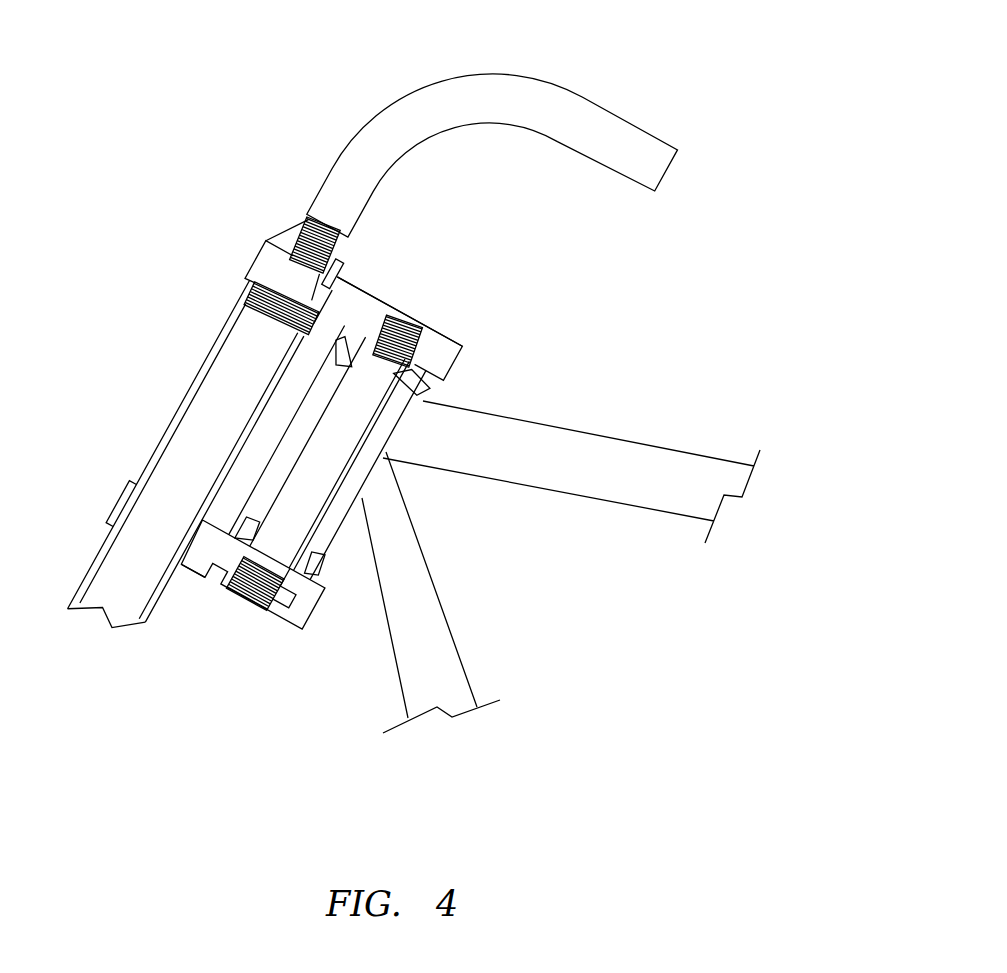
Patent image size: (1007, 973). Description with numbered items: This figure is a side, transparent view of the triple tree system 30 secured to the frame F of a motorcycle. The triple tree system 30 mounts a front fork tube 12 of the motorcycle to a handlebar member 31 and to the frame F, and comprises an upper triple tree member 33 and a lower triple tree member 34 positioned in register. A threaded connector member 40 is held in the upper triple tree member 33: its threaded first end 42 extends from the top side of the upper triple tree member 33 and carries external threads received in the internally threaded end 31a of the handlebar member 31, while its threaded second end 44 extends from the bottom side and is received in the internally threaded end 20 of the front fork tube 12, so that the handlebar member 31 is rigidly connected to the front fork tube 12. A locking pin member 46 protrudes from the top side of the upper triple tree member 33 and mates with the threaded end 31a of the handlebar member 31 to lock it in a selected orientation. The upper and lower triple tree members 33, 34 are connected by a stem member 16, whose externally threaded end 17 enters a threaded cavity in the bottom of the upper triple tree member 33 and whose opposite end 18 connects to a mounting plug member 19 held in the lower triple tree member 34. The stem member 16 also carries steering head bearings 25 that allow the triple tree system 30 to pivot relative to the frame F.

The front fork tube 12 is at (183, 400).
The stem member 16 is at (352, 464).
The threaded end of stem member 17 is at (436, 333).
The opposite end of stem member 18 is at (247, 605).
The mounting plug member 19 is at (280, 621).
The internally threaded end of front fork tube 20 is at (318, 326).
The steering head bearings 25 is at (424, 387).
The triple tree system 30 is at (178, 706).
The handlebar member 31 is at (376, 112).
The internally threaded end of handlebar member 31a is at (281, 229).
The upper triple tree member 33 is at (410, 308).
The lower triple tree member 34 is at (188, 574).
The threaded connector member 40 is at (284, 273).
The threaded first end of connector member 42 is at (305, 214).
The threaded second end of connector member 44 is at (257, 307).
The locking pin member 46 is at (344, 268).
The frame F is at (573, 428).